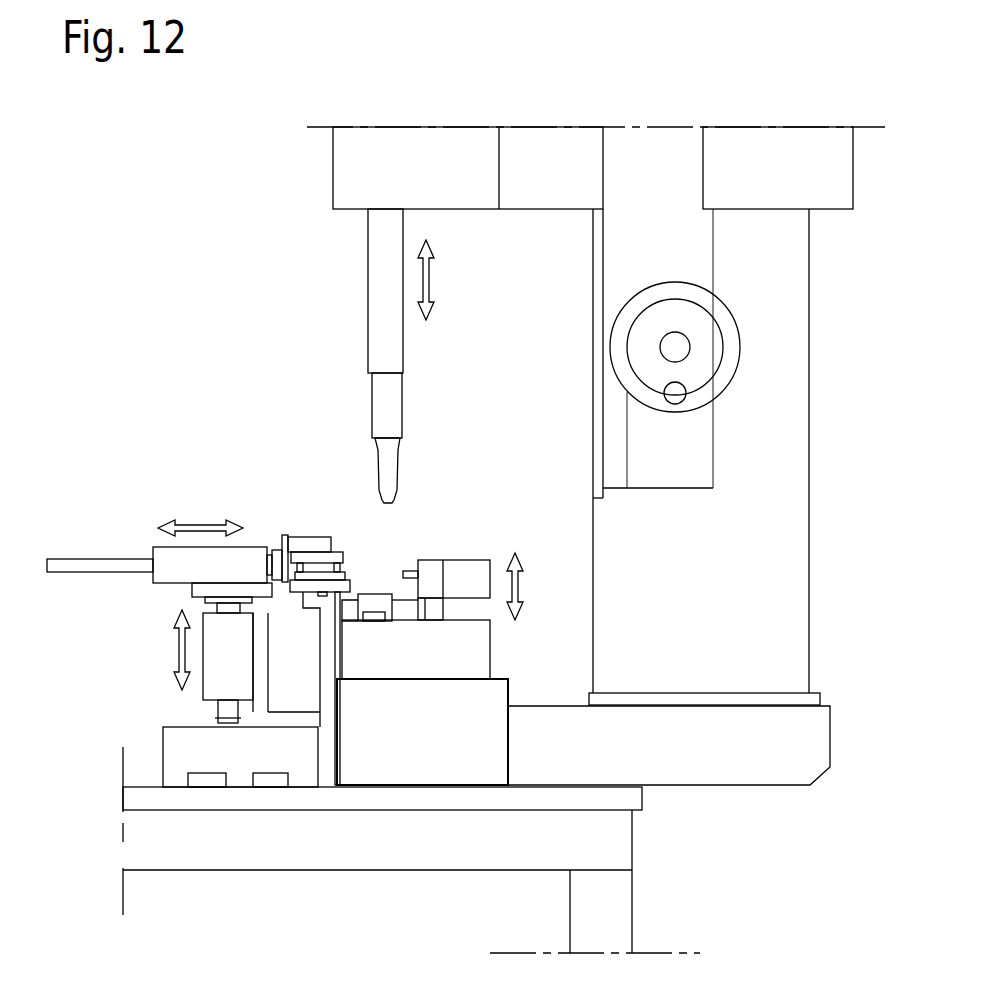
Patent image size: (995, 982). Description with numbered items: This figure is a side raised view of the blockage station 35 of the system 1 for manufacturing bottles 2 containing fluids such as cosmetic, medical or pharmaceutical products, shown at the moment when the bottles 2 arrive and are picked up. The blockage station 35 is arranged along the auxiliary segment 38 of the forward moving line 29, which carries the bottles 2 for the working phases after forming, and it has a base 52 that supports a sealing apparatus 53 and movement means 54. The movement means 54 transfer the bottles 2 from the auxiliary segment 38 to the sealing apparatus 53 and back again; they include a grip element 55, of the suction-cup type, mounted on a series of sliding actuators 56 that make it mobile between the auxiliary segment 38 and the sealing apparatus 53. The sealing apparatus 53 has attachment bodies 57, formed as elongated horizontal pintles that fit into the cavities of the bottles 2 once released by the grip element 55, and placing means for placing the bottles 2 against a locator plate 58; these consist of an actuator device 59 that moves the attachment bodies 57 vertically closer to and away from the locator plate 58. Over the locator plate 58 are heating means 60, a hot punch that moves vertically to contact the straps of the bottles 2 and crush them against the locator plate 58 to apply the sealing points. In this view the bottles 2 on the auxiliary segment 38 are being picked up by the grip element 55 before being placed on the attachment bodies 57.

The system 1 is at (202, 285).
The bottles 2 is at (352, 572).
The forward moving line 29 is at (300, 675).
The blockage station 35 is at (680, 116).
The auxiliary segment 38 is at (335, 742).
The base 52 is at (452, 848).
The sealing apparatus 53 is at (355, 398).
The movement means 54 is at (260, 530).
The grip element 55 is at (305, 537).
The sliding actuators 56 is at (162, 572).
The attachment bodies 57 is at (420, 563).
The locator plate 58 is at (368, 595).
The actuator device 59 is at (470, 565).
The heating means 60 is at (392, 455).